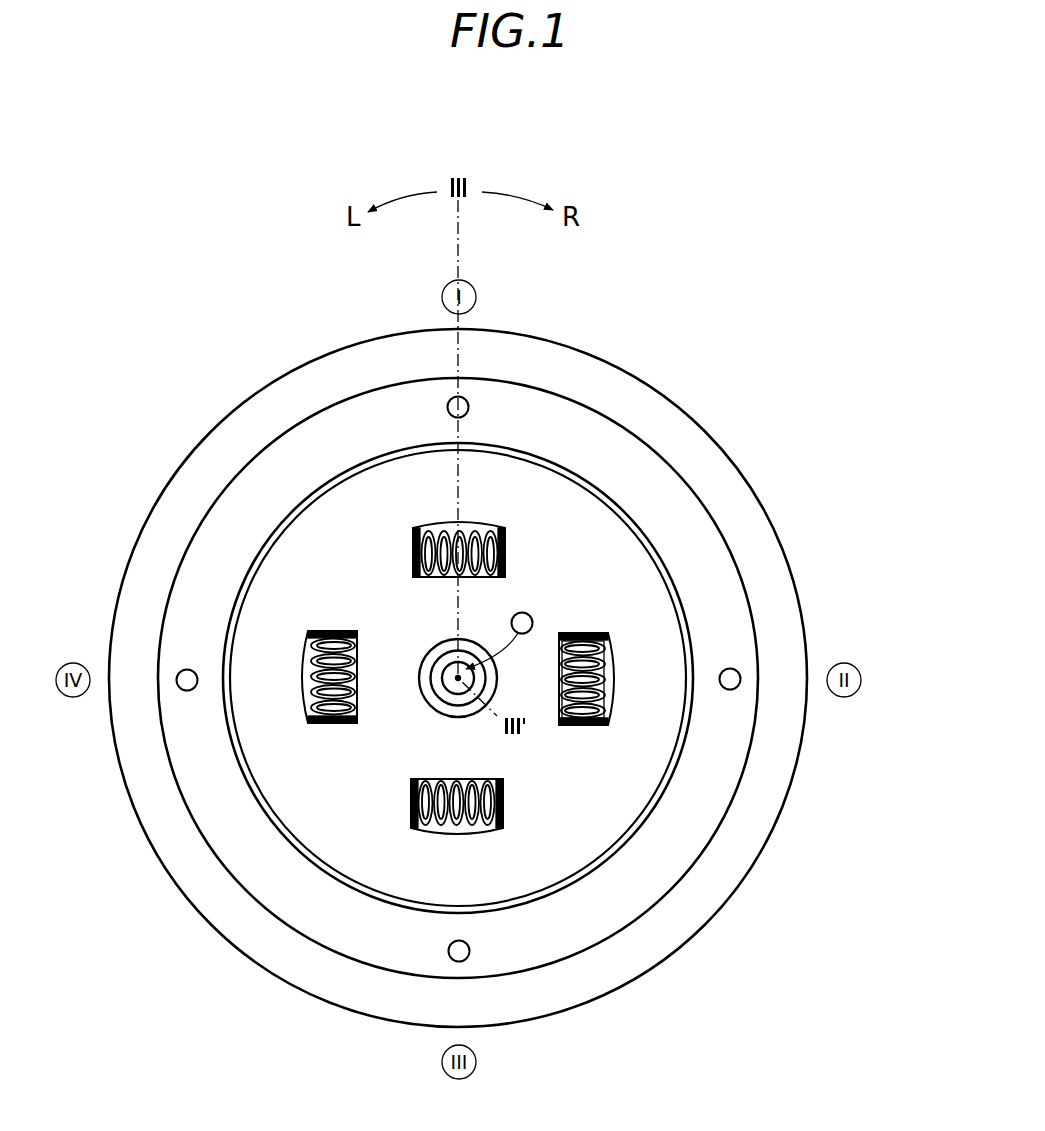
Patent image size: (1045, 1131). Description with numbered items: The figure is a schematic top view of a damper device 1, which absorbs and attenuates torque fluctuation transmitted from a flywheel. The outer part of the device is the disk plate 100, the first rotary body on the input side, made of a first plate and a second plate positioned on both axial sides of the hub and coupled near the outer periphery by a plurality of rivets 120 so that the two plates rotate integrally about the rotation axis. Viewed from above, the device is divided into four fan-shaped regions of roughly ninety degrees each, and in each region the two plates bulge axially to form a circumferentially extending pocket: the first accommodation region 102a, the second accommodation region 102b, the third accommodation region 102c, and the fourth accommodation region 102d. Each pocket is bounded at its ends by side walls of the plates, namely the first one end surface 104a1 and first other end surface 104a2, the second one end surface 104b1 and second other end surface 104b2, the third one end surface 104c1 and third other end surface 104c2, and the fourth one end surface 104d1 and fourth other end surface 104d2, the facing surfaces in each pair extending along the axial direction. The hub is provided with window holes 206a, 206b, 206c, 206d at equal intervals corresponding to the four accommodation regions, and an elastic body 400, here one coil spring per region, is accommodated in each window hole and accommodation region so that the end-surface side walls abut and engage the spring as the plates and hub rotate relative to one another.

The damper device 1 is at (824, 180).
The disk plate 100 is at (595, 433).
The rivet 120 is at (468, 393).
The elastic body 400 is at (608, 663).
The first accommodation region 102a is at (465, 527).
The second accommodation region 102b is at (610, 700).
The third accommodation region 102c is at (458, 832).
The fourth accommodation region 102d is at (303, 685).
The first one end surface 104a1 is at (413, 553).
The first other end surface 104a2 is at (505, 555).
The second one end surface 104b1 is at (590, 633).
The second other end surface 104b2 is at (590, 730).
The third one end surface 104c1 is at (507, 805).
The third other end surface 104c2 is at (425, 832).
The fourth one end surface 104d1 is at (323, 727).
The fourth other end surface 104d2 is at (328, 633).
The window hole 206a is at (433, 527).
The window hole 206b is at (613, 678).
The window hole 206c is at (440, 832).
The window hole 206d is at (303, 667).